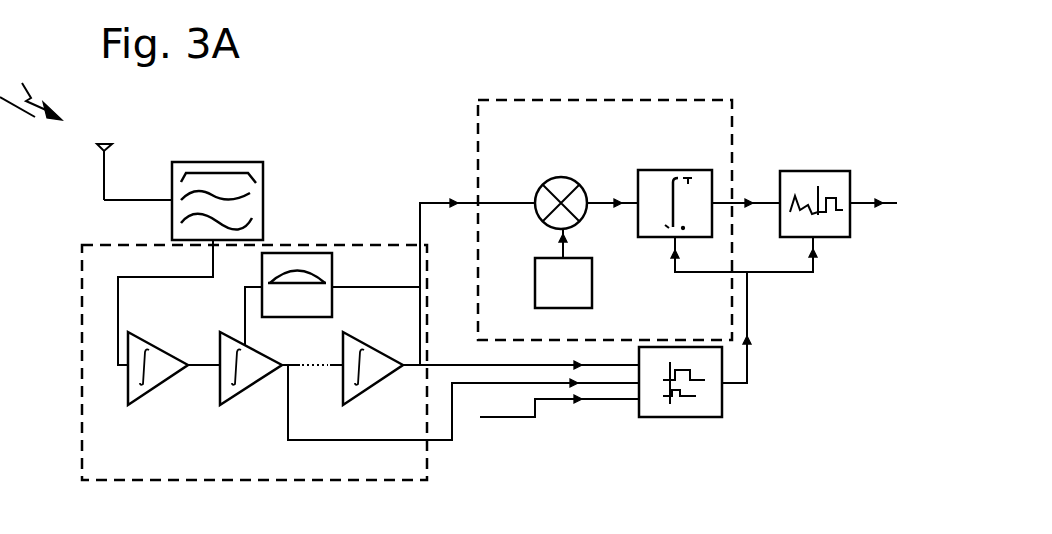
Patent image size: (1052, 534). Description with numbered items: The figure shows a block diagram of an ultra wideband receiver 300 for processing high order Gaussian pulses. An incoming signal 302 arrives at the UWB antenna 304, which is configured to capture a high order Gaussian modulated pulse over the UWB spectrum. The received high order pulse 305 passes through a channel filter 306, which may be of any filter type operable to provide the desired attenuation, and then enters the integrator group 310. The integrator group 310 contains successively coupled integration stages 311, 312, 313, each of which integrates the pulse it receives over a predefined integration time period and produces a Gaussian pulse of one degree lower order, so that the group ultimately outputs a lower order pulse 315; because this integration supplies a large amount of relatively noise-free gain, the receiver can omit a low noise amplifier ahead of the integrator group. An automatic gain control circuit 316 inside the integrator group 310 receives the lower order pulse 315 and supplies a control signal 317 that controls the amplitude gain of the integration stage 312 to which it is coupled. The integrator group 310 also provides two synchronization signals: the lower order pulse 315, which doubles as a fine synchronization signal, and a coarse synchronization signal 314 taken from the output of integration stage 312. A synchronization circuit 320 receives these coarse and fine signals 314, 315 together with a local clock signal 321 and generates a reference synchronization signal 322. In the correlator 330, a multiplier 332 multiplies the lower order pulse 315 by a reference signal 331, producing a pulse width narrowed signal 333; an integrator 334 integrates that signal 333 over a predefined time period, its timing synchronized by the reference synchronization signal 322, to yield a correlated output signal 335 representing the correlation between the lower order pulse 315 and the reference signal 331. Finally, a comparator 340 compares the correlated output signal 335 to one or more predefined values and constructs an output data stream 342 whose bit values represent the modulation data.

The UWB receiver 300 is at (370, 138).
The incoming UWB signal 302 is at (31, 90).
The UWB antenna 304 is at (100, 158).
The high order pulse 305 is at (138, 191).
The channel filter 306 is at (228, 163).
The integrator group 310 is at (254, 360).
The integration stage 311 is at (158, 361).
The integration stage 312 is at (253, 367).
The integration stage 313 is at (374, 367).
The coarse synchronization signal 314 is at (463, 414).
The lower order pulse 315 is at (521, 284).
The automatic gain control circuit 316 is at (341, 272).
The control signal 317 is at (235, 316).
The synchronization circuit 320 is at (684, 410).
The local clock signal 321 is at (558, 433).
The reference synchronization signal 322 is at (753, 327).
The correlator 330 is at (605, 188).
The reference signal 331 is at (582, 281).
The multiplier 332 is at (546, 183).
The pulse width modulated signal 333 is at (612, 214).
The integrator 334 is at (717, 198).
The correlated output signal 335 is at (746, 195).
The comparator 340 is at (821, 177).
The output data stream 342 is at (876, 192).